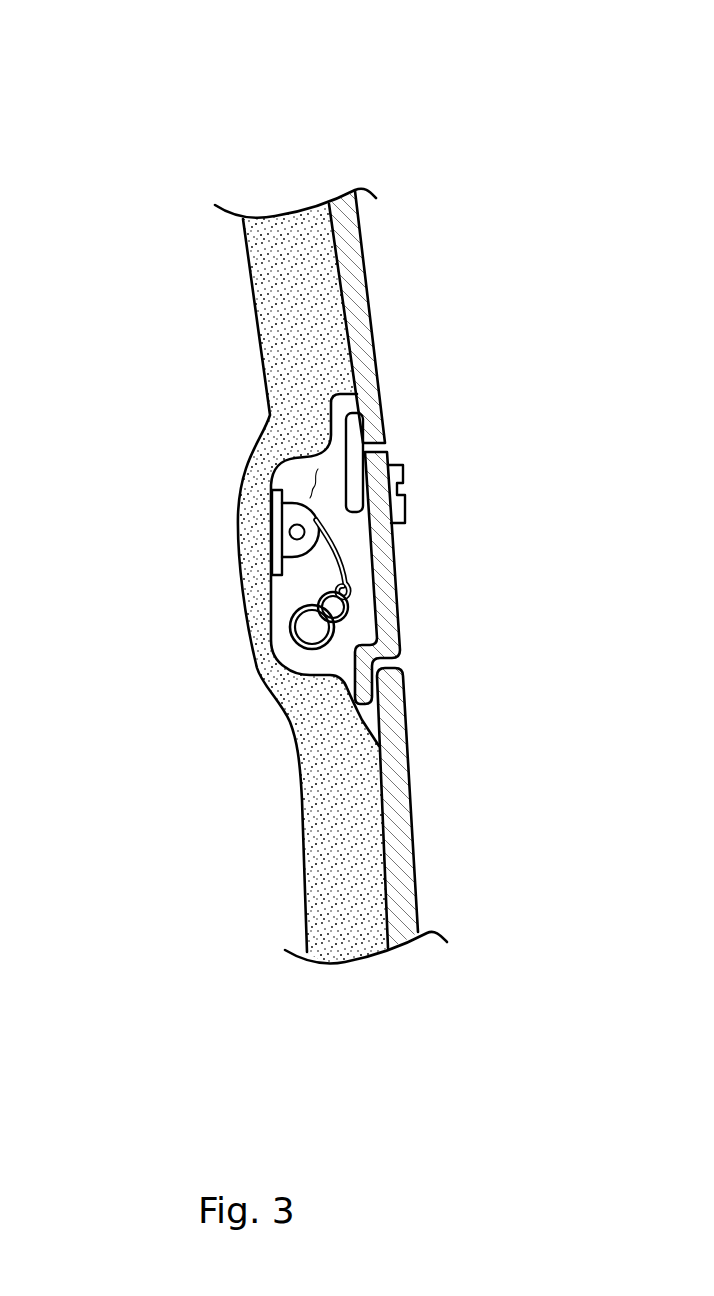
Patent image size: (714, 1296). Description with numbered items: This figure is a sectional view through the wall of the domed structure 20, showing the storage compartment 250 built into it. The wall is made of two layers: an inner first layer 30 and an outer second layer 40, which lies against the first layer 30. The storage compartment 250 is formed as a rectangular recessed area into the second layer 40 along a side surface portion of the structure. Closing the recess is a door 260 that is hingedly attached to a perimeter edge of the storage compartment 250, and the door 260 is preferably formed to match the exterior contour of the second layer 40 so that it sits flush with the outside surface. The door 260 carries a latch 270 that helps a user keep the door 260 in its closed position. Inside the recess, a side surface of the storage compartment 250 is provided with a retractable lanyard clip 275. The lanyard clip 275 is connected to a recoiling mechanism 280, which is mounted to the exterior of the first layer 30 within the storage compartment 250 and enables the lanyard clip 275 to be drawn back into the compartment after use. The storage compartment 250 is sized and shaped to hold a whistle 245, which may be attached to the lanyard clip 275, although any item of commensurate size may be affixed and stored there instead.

The domed structure 20 is at (502, 151).
The first layer 30 is at (298, 350).
The second layer 40 is at (369, 366).
The storage compartment 250 is at (310, 480).
The door 260 is at (390, 553).
The latch 270 is at (357, 482).
The recoiling mechanism 280 is at (283, 548).
The retractable lanyard clip 275 is at (330, 568).
The whistle 245 is at (296, 642).